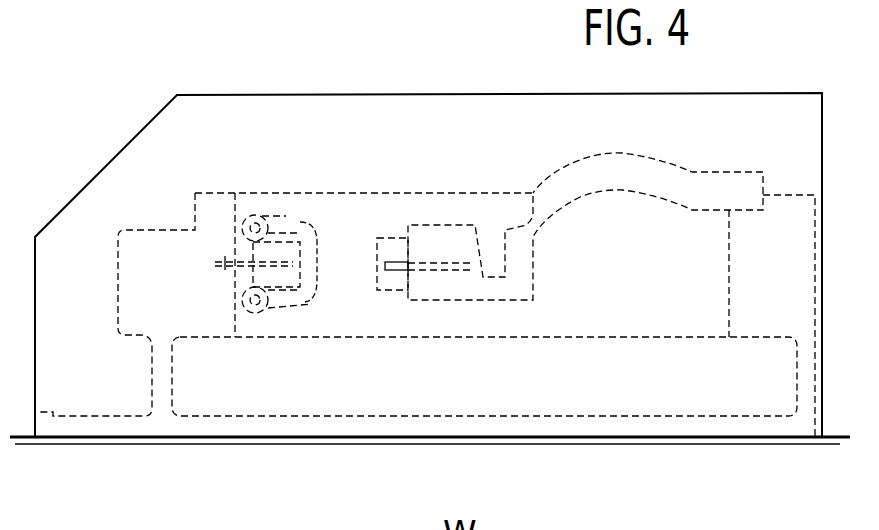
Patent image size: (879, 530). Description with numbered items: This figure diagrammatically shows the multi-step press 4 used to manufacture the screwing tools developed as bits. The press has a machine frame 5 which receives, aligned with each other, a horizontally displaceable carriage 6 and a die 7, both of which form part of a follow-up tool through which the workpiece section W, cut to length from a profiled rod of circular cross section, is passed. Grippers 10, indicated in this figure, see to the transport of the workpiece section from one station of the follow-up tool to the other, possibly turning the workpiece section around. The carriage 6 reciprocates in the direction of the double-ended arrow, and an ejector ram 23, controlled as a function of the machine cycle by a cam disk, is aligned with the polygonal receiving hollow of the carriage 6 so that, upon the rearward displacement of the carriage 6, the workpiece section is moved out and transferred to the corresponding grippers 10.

The multi-step press 4 is at (96, 170).
The machine frame 5 is at (200, 425).
The carriage 6 is at (285, 235).
The die 7 is at (392, 240).
The grippers 10 is at (313, 225).
The ejector ram 23 is at (222, 258).